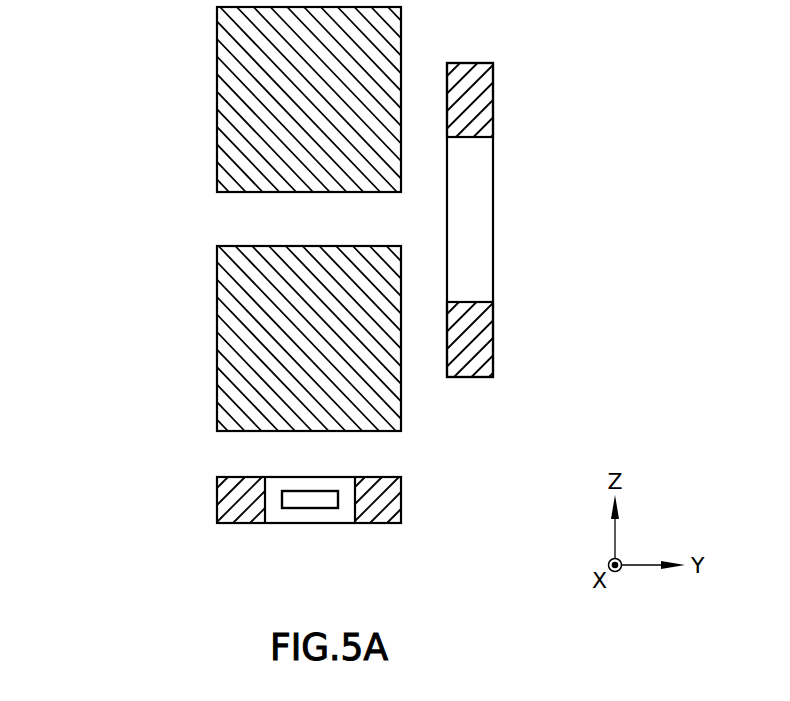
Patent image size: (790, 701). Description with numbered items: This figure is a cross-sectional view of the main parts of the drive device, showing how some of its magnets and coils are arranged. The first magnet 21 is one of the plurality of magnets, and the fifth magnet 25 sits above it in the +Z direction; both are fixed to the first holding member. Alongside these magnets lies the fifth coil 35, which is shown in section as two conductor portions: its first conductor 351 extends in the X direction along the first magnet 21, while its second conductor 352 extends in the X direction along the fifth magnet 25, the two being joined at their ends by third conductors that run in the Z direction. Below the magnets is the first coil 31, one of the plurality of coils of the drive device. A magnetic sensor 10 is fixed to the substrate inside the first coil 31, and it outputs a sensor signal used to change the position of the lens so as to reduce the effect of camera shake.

The fifth magnet 25 is at (260, 102).
The first magnet 21 is at (255, 343).
The fifth coil 35 is at (562, 220).
The second conductor 352 is at (480, 101).
The first conductor 351 is at (480, 339).
The first coil 31 is at (385, 502).
The magnetic sensor 10 is at (310, 498).